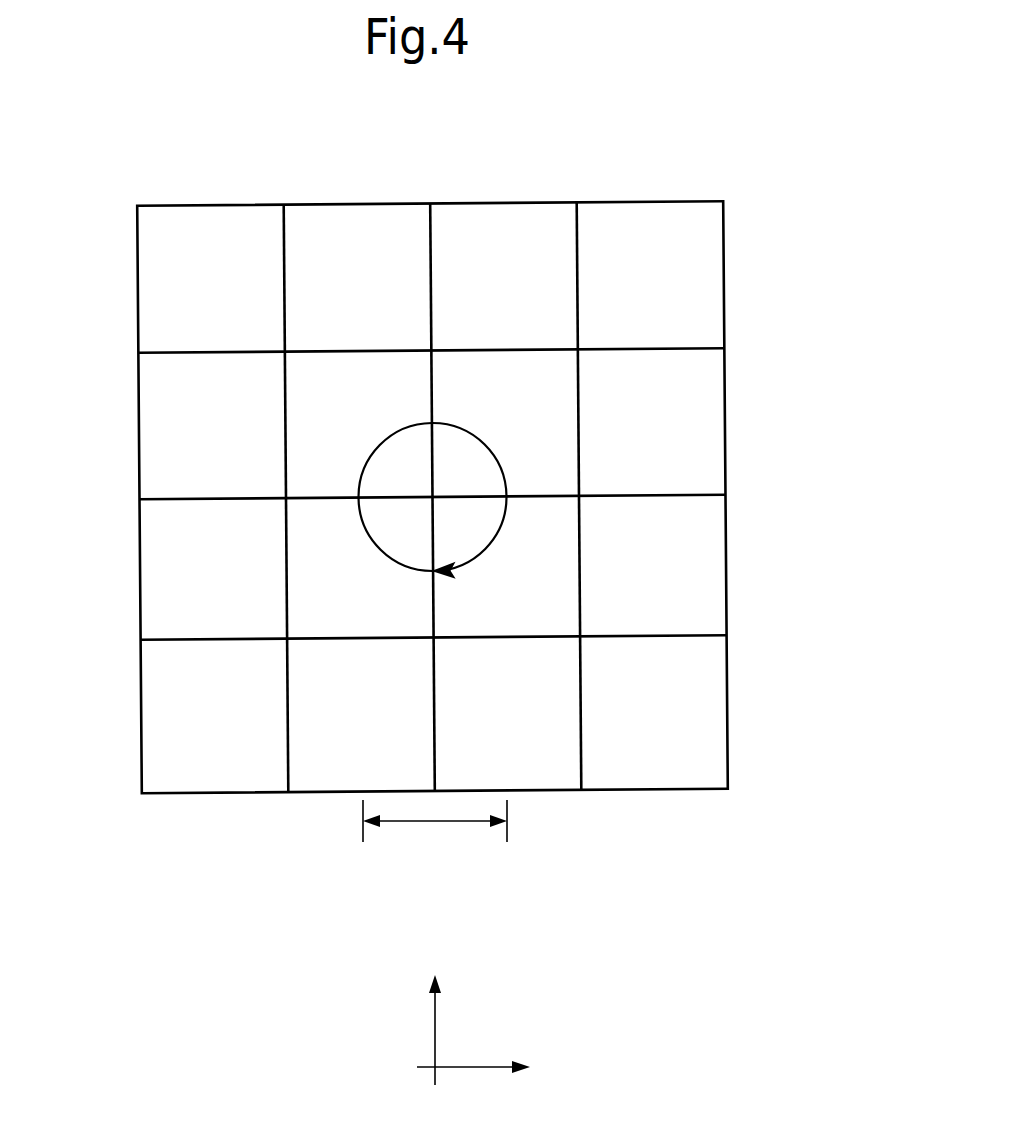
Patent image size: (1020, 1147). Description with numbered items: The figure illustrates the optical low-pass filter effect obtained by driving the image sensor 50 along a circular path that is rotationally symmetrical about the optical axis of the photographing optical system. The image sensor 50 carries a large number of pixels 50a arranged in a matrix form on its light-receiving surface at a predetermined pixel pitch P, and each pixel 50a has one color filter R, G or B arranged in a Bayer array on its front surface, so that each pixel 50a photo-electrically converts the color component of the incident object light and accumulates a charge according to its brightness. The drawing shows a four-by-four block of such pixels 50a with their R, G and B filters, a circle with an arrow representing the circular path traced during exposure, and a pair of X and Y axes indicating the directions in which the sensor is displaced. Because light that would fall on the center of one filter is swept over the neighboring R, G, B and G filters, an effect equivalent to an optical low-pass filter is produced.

The image sensor 50 is at (553, 164).
The pixel 50a is at (211, 203).
The pixel pitch P is at (435, 825).
The X axis direction X is at (485, 1068).
The Y axis direction Y is at (434, 1014).